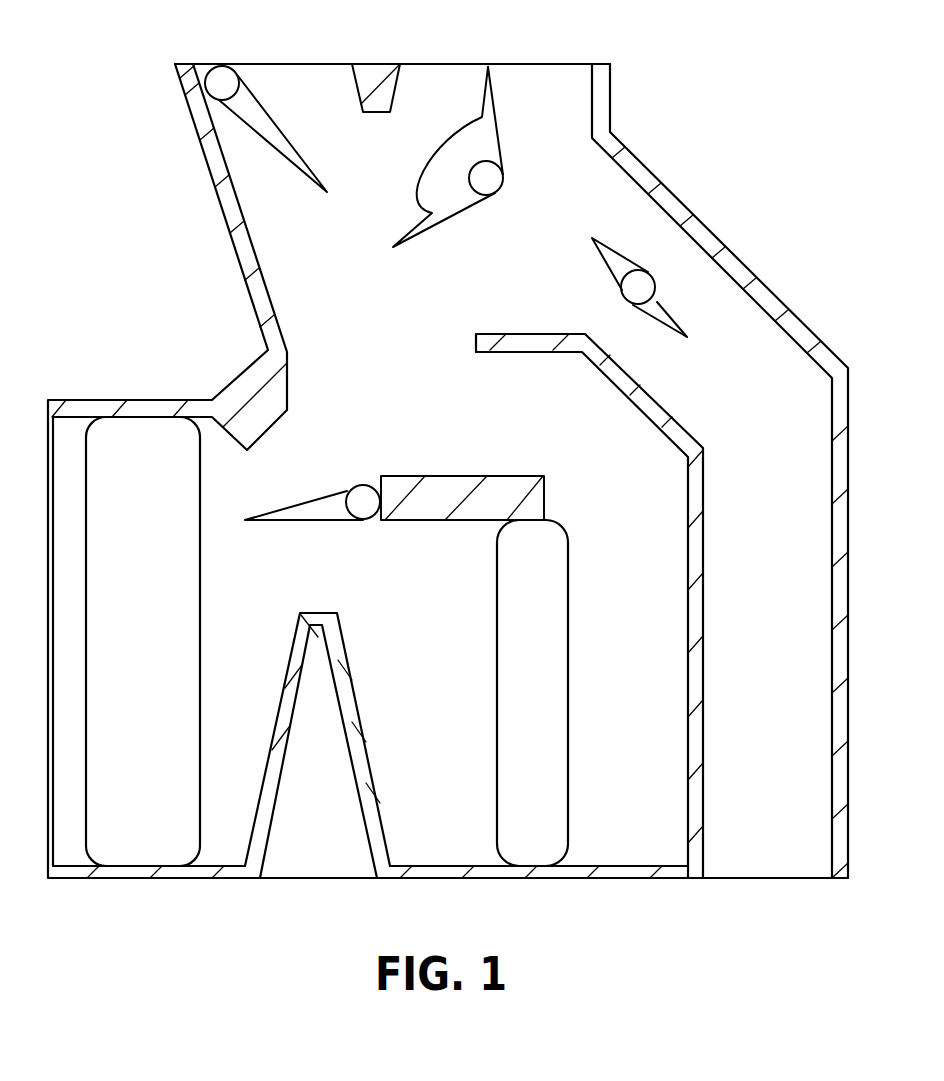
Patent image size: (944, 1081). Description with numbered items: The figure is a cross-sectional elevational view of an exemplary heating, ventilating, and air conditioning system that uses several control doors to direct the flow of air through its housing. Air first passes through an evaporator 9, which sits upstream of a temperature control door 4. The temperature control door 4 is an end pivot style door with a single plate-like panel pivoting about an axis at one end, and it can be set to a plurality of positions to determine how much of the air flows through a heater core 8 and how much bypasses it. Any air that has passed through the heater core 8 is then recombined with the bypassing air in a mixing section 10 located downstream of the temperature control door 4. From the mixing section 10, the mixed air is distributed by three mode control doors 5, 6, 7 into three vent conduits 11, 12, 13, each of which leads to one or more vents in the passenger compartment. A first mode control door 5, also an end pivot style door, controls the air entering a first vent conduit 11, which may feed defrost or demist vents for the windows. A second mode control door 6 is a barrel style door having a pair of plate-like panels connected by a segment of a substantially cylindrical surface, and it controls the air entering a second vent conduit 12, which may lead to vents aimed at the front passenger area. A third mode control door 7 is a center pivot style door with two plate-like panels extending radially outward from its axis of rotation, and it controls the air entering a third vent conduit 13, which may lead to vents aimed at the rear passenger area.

The temperature control door 4 is at (307, 503).
The first mode control door 5 is at (286, 134).
The second mode control door 6 is at (460, 213).
The third mode control door 7 is at (621, 297).
The heater core 8 is at (542, 660).
The evaporator 9 is at (172, 600).
The mixing section 10 is at (365, 330).
The first vent conduit 11 is at (297, 88).
The second vent conduit 12 is at (452, 88).
The third vent conduit 13 is at (652, 235).